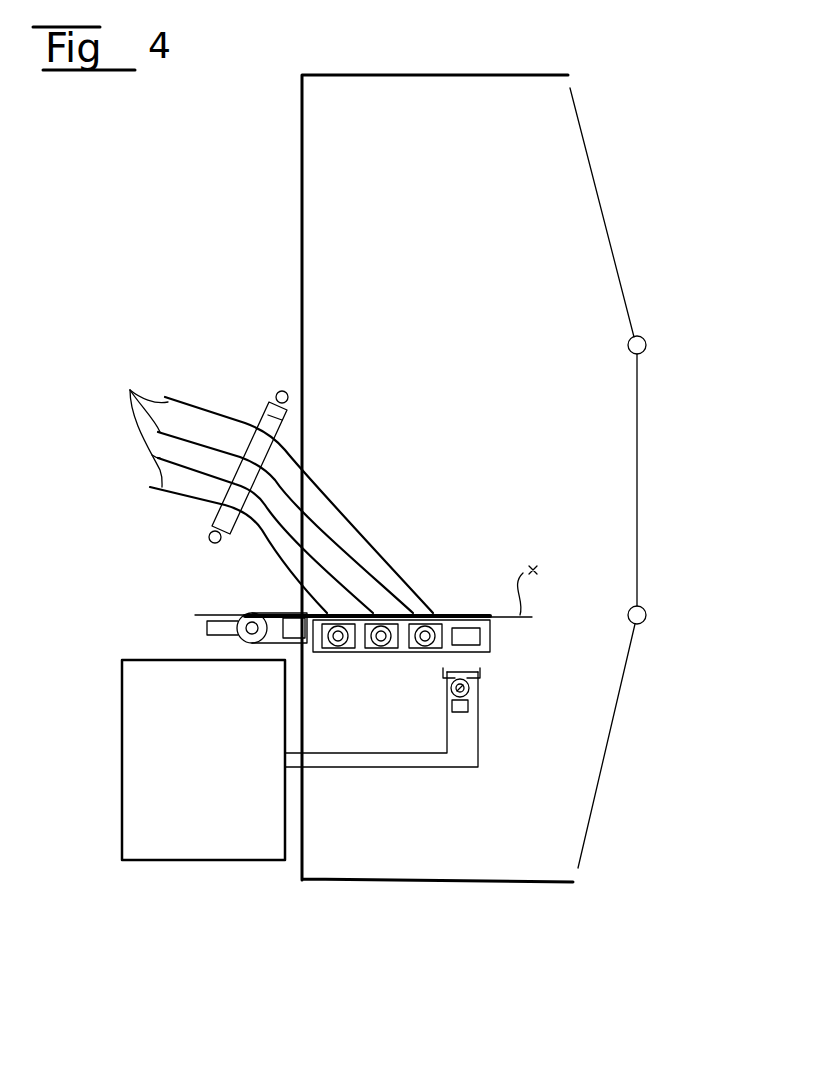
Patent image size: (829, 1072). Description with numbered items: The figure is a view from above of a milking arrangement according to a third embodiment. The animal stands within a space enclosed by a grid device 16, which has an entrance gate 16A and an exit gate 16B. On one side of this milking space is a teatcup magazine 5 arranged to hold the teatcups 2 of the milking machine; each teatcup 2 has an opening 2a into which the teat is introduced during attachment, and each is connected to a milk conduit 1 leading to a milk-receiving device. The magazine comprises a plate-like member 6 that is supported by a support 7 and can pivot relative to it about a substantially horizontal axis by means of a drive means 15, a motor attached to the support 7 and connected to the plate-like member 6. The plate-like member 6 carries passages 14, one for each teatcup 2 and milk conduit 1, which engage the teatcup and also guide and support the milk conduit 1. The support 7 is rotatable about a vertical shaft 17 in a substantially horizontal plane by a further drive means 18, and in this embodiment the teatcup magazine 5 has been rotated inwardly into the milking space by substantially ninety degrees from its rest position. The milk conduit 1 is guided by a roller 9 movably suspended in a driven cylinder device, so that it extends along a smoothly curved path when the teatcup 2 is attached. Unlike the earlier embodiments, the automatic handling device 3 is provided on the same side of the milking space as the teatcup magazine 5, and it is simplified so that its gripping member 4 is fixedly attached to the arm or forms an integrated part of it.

The milk conduit 1 is at (130, 390).
The teatcup 2 is at (447, 688).
The opening of teatcup 2a is at (480, 690).
The automatic handling device 3 is at (135, 748).
The gripping member 4 is at (467, 725).
The teatcup magazine 5 is at (453, 535).
The plate-like member 6 is at (480, 632).
The support 7 is at (278, 640).
The roller 9 is at (262, 410).
The passage 14 is at (490, 648).
The drive means 15 is at (292, 615).
The grid device 16 is at (387, 882).
The entrance gate 16A is at (605, 755).
The exit gate 16B is at (595, 192).
The vertical shaft 17 is at (250, 642).
The drive means 18 is at (207, 633).